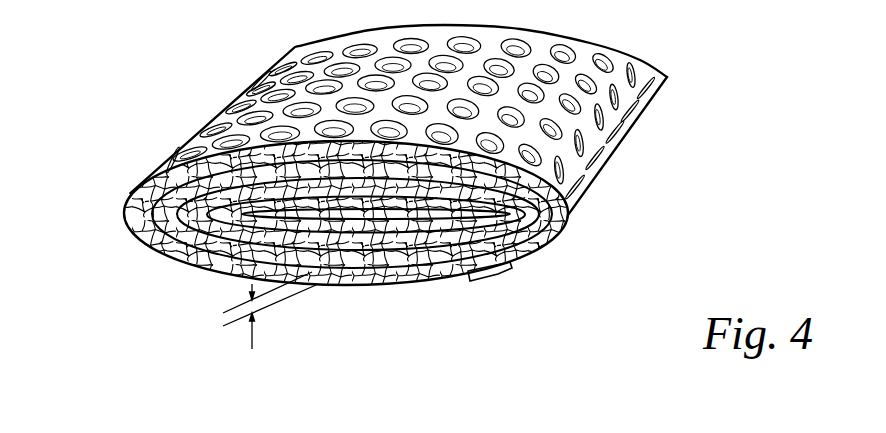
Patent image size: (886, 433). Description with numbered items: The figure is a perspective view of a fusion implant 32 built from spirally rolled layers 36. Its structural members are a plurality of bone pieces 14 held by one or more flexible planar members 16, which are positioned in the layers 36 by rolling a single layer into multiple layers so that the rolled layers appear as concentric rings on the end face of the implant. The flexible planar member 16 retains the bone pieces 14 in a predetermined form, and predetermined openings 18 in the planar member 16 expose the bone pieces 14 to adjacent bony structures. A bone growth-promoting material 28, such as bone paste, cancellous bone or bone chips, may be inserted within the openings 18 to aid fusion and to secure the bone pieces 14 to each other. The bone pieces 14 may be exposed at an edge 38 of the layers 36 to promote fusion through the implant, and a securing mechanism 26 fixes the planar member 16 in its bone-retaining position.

The fusion implant 32 is at (115, 58).
The bone growth-promoting material 28 is at (607, 70).
The predetermined openings 18 is at (644, 88).
The flexible planar member 16 is at (142, 240).
The bone pieces 14 is at (180, 250).
The edge 38 is at (407, 265).
The layers 36 is at (252, 349).
The securing mechanism 26 is at (499, 274).